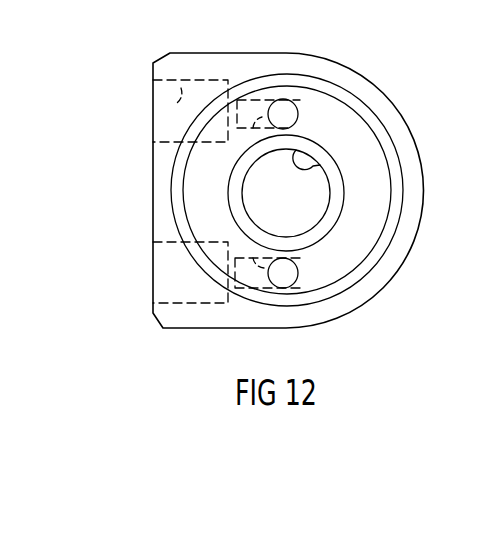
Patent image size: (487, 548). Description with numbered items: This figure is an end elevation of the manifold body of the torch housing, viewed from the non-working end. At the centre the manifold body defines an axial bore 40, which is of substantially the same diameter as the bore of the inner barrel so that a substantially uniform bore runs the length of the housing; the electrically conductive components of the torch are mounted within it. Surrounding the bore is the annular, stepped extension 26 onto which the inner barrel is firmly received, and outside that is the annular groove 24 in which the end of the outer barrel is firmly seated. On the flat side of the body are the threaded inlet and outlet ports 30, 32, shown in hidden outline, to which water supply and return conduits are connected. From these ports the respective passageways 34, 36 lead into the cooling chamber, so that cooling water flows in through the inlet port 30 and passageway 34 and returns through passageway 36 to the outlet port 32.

The annular groove 24 is at (380, 246).
The annular stepped extension 26 is at (340, 183).
The inlet port 30 is at (188, 297).
The outlet port 32 is at (207, 100).
The inlet passageway 34 is at (240, 274).
The outlet passageway 36 is at (240, 116).
The axial bore 40 is at (318, 166).